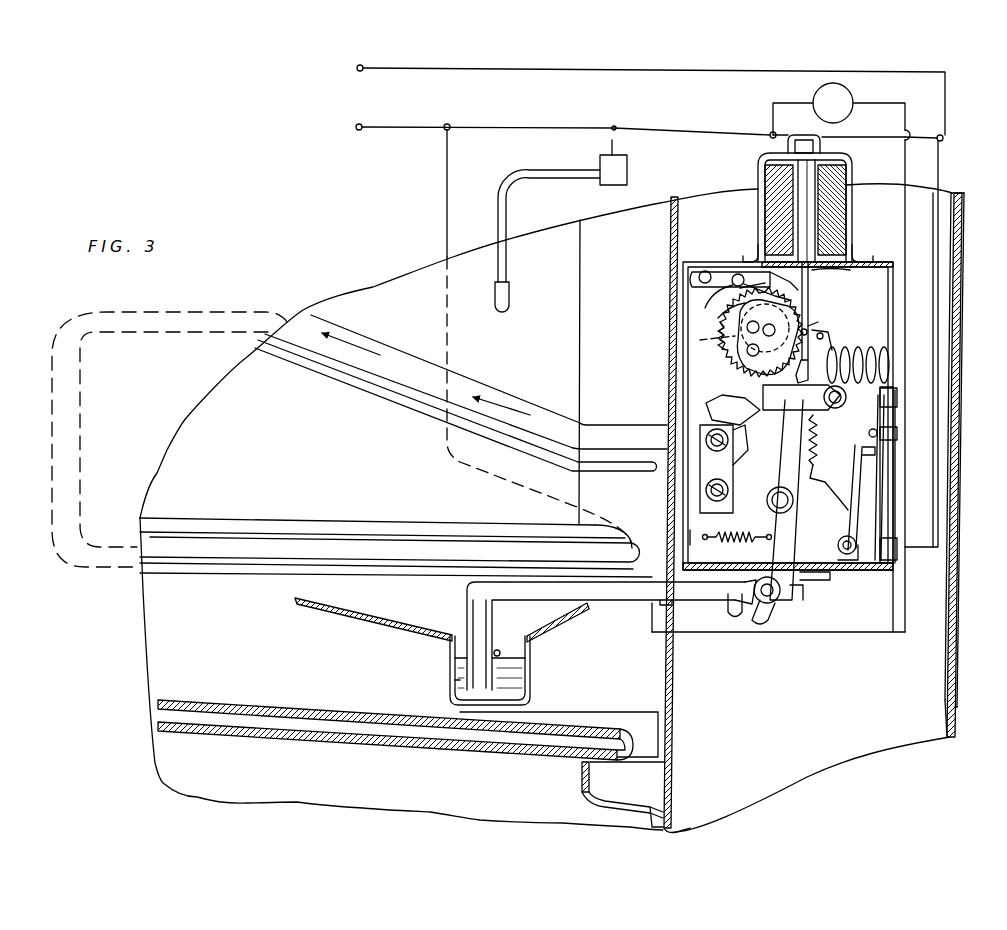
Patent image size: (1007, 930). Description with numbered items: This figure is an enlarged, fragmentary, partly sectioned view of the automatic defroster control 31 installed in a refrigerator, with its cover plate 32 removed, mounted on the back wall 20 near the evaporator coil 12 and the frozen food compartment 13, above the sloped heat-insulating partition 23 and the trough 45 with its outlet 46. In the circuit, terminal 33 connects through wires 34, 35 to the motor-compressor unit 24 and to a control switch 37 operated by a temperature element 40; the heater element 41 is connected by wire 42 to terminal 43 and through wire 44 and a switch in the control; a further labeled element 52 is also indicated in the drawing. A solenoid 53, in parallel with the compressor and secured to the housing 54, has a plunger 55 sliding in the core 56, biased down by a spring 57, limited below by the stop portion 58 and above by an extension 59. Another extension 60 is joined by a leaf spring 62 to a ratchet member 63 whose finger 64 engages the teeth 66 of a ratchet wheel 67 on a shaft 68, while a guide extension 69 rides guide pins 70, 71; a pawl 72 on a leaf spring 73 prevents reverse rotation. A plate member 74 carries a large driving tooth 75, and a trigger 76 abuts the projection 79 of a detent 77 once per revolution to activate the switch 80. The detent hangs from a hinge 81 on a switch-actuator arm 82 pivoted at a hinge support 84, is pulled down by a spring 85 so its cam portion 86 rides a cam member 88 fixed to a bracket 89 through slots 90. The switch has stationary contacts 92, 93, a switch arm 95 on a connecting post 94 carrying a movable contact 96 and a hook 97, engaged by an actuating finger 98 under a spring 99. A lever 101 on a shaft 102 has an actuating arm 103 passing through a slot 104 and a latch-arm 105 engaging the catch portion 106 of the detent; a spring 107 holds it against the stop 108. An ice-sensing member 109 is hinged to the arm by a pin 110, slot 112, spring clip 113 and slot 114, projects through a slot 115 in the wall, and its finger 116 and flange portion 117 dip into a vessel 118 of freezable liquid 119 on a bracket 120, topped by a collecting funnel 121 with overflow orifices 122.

The evaporator coil 12 is at (402, 368).
The frozen food compartment 13 is at (583, 242).
The back wall 20 is at (663, 660).
The heat-insulating partition 23 is at (368, 740).
The motor-compressor unit 24 is at (841, 111).
The automatic defroster control 31 is at (892, 578).
The cover plate 32 is at (952, 604).
The terminal 33 is at (357, 70).
The wire 34 is at (940, 243).
The wire 35 is at (905, 202).
The control switch 37 is at (625, 135).
The temperature element 40 is at (509, 288).
The heater element 41 is at (433, 412).
The wire 42 is at (447, 195).
The terminal 43 is at (412, 130).
The wire 44 is at (823, 635).
The trough 45 is at (583, 775).
The outlet 46 is at (670, 808).
The switch 52 is at (902, 397).
The solenoid 53 is at (773, 153).
The housing 54 is at (683, 262).
The plunger 55 is at (817, 252).
The core 56 is at (763, 176).
The spring 57 is at (806, 135).
The stop portion 58 is at (802, 263).
The extension 59 is at (855, 167).
The extension 60 is at (820, 283).
The leaf spring 62 is at (808, 297).
The ratchet member 63 is at (818, 322).
The finger 64 is at (805, 310).
The teeth 66 is at (733, 290).
The ratchet wheel 67 is at (733, 325).
The shaft 68 is at (732, 330).
The guide extension 69 is at (825, 396).
The guide pin 70 is at (824, 336).
The second guide pin 71 is at (822, 343).
The pawl 72 is at (750, 285).
The leaf spring 73 is at (760, 283).
The plate member 74 is at (700, 347).
The driving tooth 75 is at (790, 300).
The trigger 76 is at (737, 360).
The detent 77 is at (735, 395).
The projection 79 is at (768, 384).
The switch 80 is at (880, 448).
The hinge 81 is at (889, 398).
The switch-actuator arm 82 is at (853, 507).
The hinge support 84 is at (843, 560).
The spring 85 is at (808, 480).
The cam portion 86 is at (787, 407).
The cam member 88 is at (715, 435).
The bracket 89 is at (690, 478).
The slots 90 is at (720, 475).
The stationary contact member 92 is at (860, 413).
The stationary contact member 93 is at (907, 425).
The connecting post 94 is at (897, 550).
The switch arm 95 is at (883, 522).
The movable contact 96 is at (869, 433).
The hook 97 is at (878, 462).
The actuating finger 98 is at (863, 497).
The spring 99 is at (880, 353).
The lever 101 is at (787, 530).
The shaft 102 is at (777, 488).
The actuating arm 103 is at (797, 590).
The slot 104 is at (802, 577).
The latch-arm 105 is at (733, 470).
The catch portion 106 is at (735, 452).
The spring 107 is at (690, 540).
The stop 108 is at (752, 543).
The ice-sensing member 109 is at (628, 594).
The pin 110 is at (763, 623).
The slot 112 is at (747, 593).
The spring clip 113 is at (750, 627).
The slot 114 is at (732, 620).
The slot 115 is at (670, 603).
The finger 116 is at (470, 643).
The flange portion 117 is at (488, 683).
The vessel 118 is at (530, 672).
The freezable liquid 119 is at (530, 691).
The bracket 120 is at (596, 702).
The collecting funnel 121 is at (380, 620).
The overflow orifices 122 is at (500, 653).